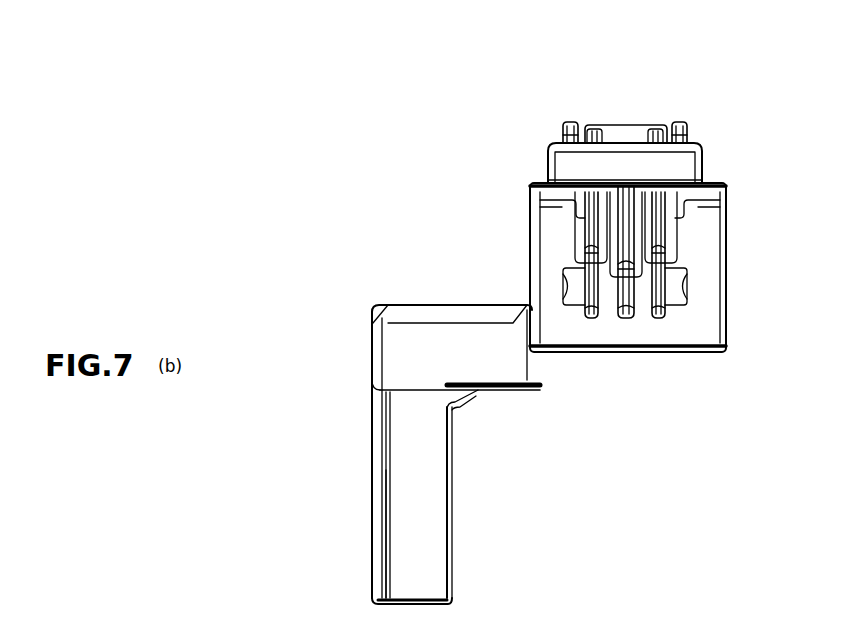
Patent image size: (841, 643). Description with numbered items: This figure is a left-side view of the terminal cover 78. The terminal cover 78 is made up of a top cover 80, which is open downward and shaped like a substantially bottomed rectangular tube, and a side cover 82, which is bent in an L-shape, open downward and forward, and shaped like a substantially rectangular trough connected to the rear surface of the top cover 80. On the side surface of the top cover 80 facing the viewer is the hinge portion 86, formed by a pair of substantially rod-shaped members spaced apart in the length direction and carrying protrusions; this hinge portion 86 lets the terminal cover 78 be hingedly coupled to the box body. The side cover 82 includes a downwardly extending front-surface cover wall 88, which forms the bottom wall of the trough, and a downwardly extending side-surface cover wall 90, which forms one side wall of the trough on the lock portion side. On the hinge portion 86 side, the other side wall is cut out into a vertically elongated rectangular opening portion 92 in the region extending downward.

The terminal cover 78 is at (636, 85).
The top cover 80 is at (714, 140).
The side cover 82 is at (348, 294).
The hinge portion 86 is at (552, 247).
The front-surface cover wall 88 is at (372, 470).
The side-surface cover wall 90 is at (405, 532).
The opening portion 92 is at (388, 447).